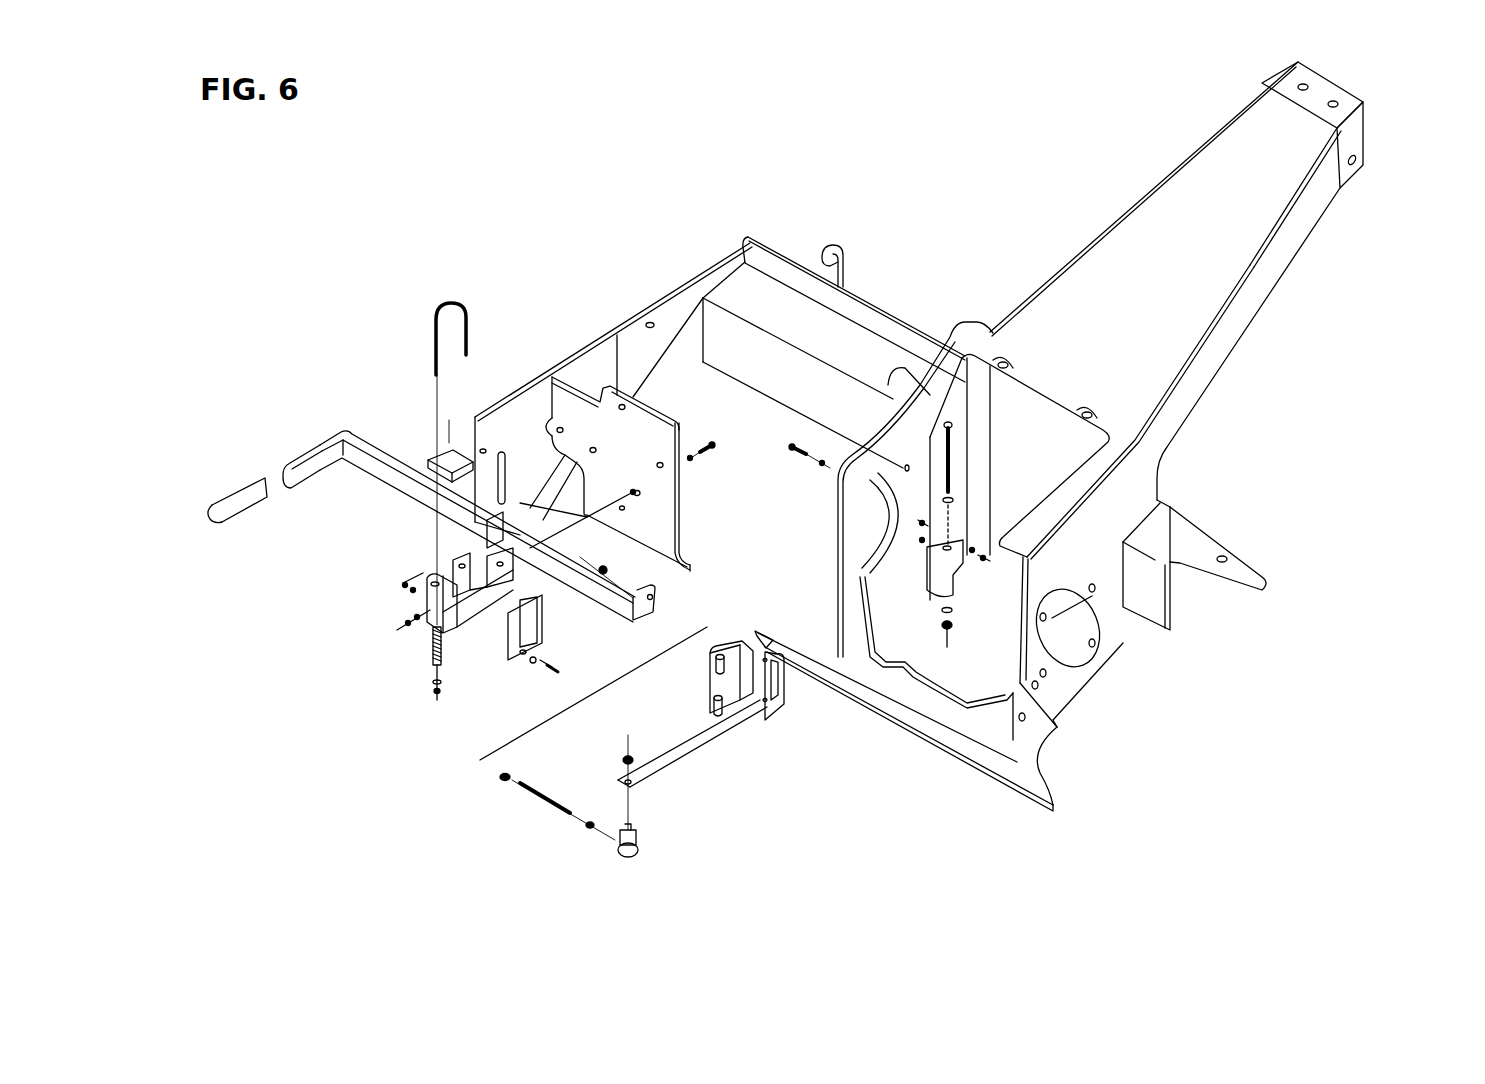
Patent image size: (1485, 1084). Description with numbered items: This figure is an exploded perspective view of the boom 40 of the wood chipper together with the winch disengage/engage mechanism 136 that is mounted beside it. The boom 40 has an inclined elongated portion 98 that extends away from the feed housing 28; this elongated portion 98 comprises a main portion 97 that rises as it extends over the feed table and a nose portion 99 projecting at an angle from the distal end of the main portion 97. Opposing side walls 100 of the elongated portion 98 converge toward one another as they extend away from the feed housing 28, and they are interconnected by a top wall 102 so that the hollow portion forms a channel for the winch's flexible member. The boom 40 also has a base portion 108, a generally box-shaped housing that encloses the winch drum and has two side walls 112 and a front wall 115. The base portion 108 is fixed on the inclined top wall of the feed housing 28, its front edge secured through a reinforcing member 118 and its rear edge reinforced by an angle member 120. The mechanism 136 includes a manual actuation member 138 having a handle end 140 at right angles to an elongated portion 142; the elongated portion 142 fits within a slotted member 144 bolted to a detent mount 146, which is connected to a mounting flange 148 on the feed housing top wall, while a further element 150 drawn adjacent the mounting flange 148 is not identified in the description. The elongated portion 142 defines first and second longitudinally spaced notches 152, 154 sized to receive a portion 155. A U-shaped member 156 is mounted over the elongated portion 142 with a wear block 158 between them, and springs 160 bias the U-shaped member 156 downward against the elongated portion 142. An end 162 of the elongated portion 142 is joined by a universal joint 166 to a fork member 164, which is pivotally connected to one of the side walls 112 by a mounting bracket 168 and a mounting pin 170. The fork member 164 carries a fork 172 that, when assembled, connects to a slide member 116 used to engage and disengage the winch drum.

The boom 40 is at (1043, 200).
The side walls 100 is at (1183, 157).
The nose portion 99 is at (1358, 128).
The top wall 102 is at (1190, 270).
The main portion 97 is at (1255, 298).
The elongated portion 98 is at (1225, 345).
The angle member 120 is at (1174, 530).
The base portion 108 is at (1132, 654).
The side walls 112 is at (913, 428).
The reinforcing member 118 is at (1028, 778).
The front wall 115 is at (988, 725).
The mounting pin 170 is at (950, 425).
The mounting bracket 168 is at (960, 538).
The slide member 116 is at (680, 387).
The feed housing 28 is at (660, 383).
The side plate 150 is at (520, 407).
The U-shaped member 156 is at (455, 303).
The manual actuation member 138 is at (368, 425).
The wear block 158 is at (432, 462).
The handle end 140 is at (296, 460).
The elongated portion 142 is at (378, 467).
The second notch 154 is at (475, 518).
The first notch 152 is at (520, 532).
The mounting flange 148 is at (656, 520).
The end 162 is at (656, 594).
The slotted member 144 is at (538, 622).
The portion 155 is at (467, 600).
The detent mount 146 is at (448, 620).
The springs 160 is at (432, 660).
The winch disengage/engage mechanism 136 is at (366, 641).
The fork 172 is at (717, 658).
The fork member 164 is at (716, 740).
The universal joint 166 is at (640, 851).